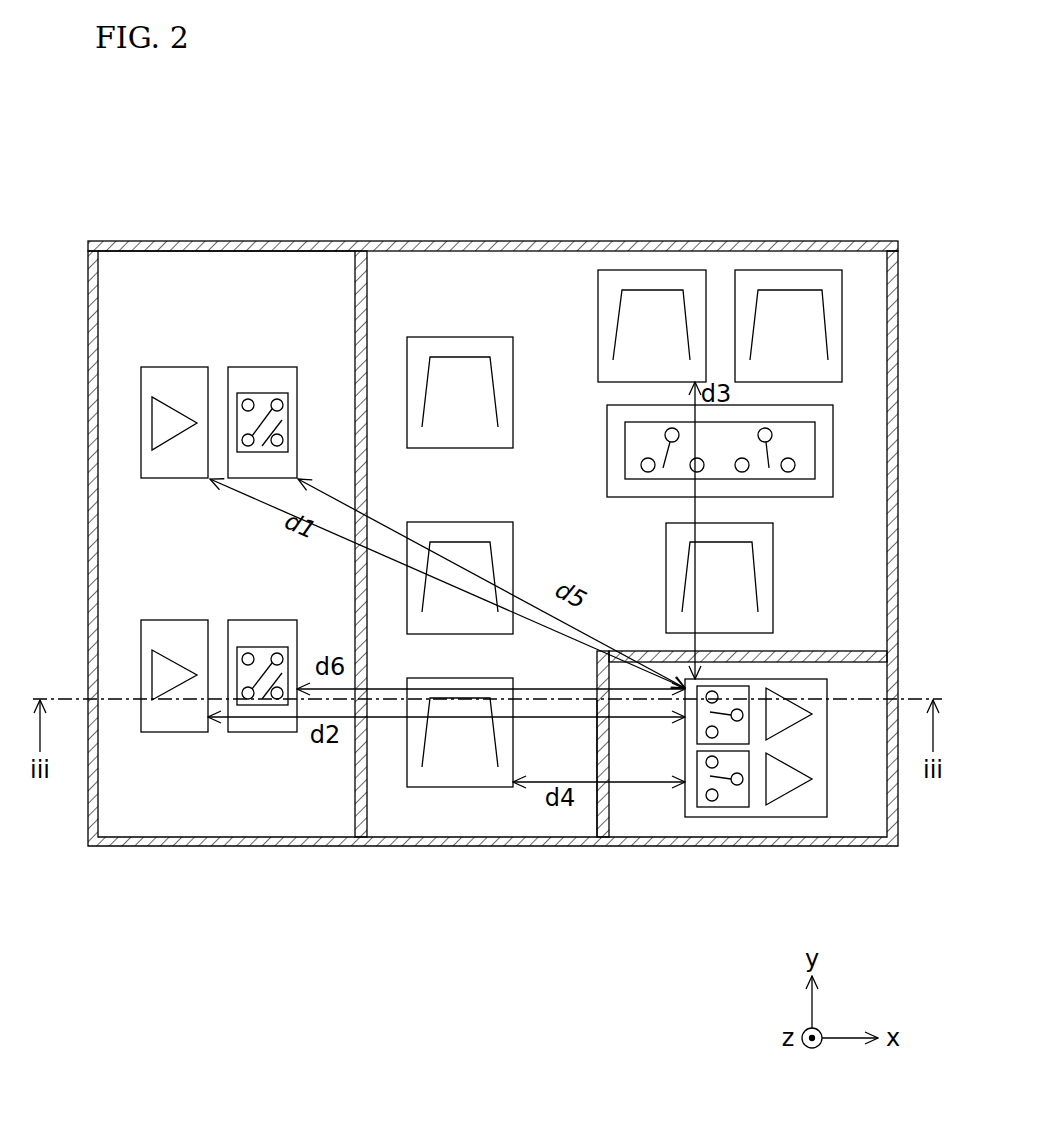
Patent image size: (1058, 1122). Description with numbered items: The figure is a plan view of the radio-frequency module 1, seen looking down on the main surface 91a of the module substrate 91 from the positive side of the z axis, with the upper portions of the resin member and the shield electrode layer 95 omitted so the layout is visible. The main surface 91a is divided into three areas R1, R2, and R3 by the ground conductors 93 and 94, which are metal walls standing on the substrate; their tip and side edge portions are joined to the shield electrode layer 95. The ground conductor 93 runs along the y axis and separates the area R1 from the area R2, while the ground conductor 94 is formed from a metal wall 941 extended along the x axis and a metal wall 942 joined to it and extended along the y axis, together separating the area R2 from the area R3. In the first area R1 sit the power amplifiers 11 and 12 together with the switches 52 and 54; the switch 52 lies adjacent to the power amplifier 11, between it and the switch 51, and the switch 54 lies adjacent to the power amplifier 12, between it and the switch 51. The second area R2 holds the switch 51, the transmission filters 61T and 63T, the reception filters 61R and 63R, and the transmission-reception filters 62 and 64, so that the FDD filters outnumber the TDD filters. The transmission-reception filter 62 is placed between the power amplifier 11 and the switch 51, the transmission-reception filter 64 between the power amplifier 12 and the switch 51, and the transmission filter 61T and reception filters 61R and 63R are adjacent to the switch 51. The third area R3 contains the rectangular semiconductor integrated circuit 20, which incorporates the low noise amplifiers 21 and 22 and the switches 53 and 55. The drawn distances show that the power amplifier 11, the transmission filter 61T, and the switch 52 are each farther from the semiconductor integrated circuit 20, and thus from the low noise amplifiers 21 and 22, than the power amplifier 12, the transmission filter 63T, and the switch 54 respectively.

The radio-frequency module 1 is at (501, 493).
The power amplifier 11 is at (163, 367).
The power amplifier 12 is at (164, 620).
The semiconductor integrated circuit 20 is at (744, 717).
The low noise amplifier 21 is at (803, 709).
The low noise amplifier 22 is at (801, 768).
The switch 51 is at (833, 456).
The switch 52 is at (257, 367).
The switch 53 is at (743, 681).
The switch 54 is at (297, 655).
The switch 55 is at (697, 772).
The transmission filter 61T is at (638, 270).
The reception filter 61R is at (775, 270).
The transmission-reception filter 62 is at (440, 337).
The transmission filter 63T is at (478, 678).
The reception filter 63R is at (773, 594).
The transmission-reception filter 64 is at (440, 522).
The module substrate 91 is at (493, 505).
The main surface 91a is at (285, 262).
The ground conductor 93 is at (360, 840).
The ground conductor 94 is at (600, 840).
The metal wall 941 is at (820, 653).
The metal wall 942 is at (597, 775).
The shield electrode layer 95 is at (480, 243).
The first area R1 is at (257, 823).
The second area R2 is at (465, 823).
The third area R3 is at (665, 823).